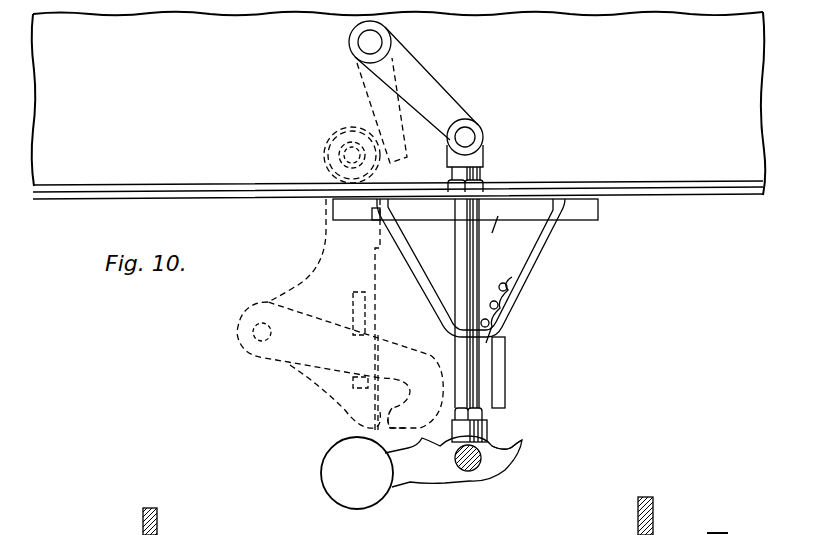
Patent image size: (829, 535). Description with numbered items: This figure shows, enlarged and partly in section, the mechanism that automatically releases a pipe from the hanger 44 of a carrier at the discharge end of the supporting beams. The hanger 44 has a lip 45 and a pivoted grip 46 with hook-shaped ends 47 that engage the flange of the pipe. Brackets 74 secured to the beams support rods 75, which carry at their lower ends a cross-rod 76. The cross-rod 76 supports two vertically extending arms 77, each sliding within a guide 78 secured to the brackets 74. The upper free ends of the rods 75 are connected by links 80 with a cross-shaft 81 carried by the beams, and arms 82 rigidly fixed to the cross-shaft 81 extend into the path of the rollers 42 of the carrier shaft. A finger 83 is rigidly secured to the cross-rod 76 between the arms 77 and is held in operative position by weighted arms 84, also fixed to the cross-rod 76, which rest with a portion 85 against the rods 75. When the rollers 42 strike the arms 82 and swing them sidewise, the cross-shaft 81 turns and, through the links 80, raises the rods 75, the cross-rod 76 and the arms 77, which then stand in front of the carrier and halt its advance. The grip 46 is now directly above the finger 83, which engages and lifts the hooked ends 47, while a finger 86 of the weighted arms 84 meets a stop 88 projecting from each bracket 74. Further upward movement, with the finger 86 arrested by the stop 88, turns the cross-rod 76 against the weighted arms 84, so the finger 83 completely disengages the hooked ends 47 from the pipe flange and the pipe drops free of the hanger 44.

The rollers 42 is at (322, 150).
The hanger 44 is at (321, 272).
The lip 45 is at (378, 408).
The grip 46 is at (307, 367).
The hook-shaped ends 47 is at (388, 420).
The brackets 74 is at (525, 263).
The rods 75 is at (463, 295).
The cross-rod 76 is at (470, 470).
The arms 77 is at (473, 382).
The guide 78 is at (503, 213).
The links 80 is at (437, 92).
The cross-shaft 81 is at (360, 42).
The arms 82 is at (368, 97).
The finger 83 is at (440, 465).
The weighted arms 84 is at (332, 470).
The portion 85 is at (492, 440).
The finger 86 is at (517, 443).
The stop 88 is at (505, 400).